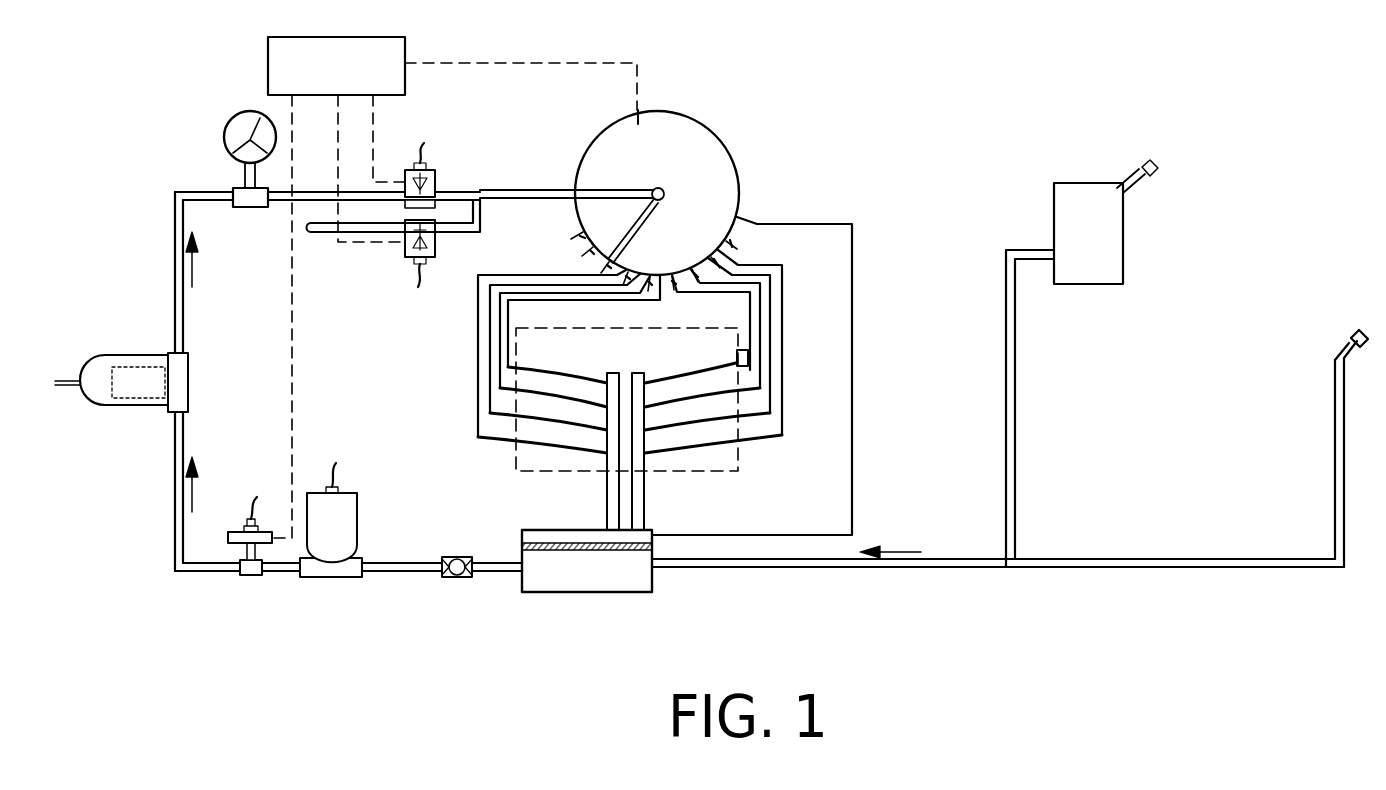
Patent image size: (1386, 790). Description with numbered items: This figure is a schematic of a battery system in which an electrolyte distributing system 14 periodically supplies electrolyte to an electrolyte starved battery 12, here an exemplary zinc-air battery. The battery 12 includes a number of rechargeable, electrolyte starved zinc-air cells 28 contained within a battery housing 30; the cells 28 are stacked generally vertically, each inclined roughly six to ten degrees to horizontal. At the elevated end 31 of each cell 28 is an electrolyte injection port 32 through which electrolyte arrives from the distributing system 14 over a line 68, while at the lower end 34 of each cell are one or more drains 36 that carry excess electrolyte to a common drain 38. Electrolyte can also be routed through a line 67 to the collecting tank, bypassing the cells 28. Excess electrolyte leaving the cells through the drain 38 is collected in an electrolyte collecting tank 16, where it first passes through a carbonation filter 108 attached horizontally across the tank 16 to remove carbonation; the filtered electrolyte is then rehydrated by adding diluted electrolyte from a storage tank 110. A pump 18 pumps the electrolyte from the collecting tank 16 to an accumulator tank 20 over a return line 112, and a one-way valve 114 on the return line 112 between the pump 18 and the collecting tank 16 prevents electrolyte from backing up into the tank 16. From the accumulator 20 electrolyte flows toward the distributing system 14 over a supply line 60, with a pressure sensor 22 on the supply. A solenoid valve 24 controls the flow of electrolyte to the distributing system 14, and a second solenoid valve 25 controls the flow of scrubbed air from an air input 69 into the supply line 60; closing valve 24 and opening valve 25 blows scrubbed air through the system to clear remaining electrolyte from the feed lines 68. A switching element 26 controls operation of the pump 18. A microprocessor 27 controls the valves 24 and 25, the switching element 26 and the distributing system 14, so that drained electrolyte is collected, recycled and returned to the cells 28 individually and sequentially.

The electrolyte starved battery 12 is at (744, 455).
The electrolyte distributing system 14 is at (710, 160).
The electrolyte collecting tank 16 is at (590, 587).
The pump 18 is at (333, 570).
The accumulator tank 20 is at (95, 388).
The pressure sensor 22 is at (229, 122).
The solenoid valve 24 is at (434, 170).
The solenoid valve 25 is at (410, 240).
The switching element 26 is at (250, 575).
The microprocessor 27 is at (406, 46).
The zinc-air cells 28 is at (698, 366).
The battery housing 30 is at (749, 352).
The elevated end 31 is at (744, 402).
The electrolyte injection port 32 is at (497, 440).
The lower end 34 is at (616, 369).
The drains 36 is at (598, 457).
The common drain 38 is at (646, 480).
The supply line 60 is at (543, 190).
The line 67 is at (806, 223).
The line 68 is at (476, 377).
The air input 69 is at (321, 234).
The carbonation filter 108 is at (560, 543).
The storage tank 110 is at (1115, 225).
The return line 112 is at (315, 191).
The one-way valve 114 is at (456, 557).